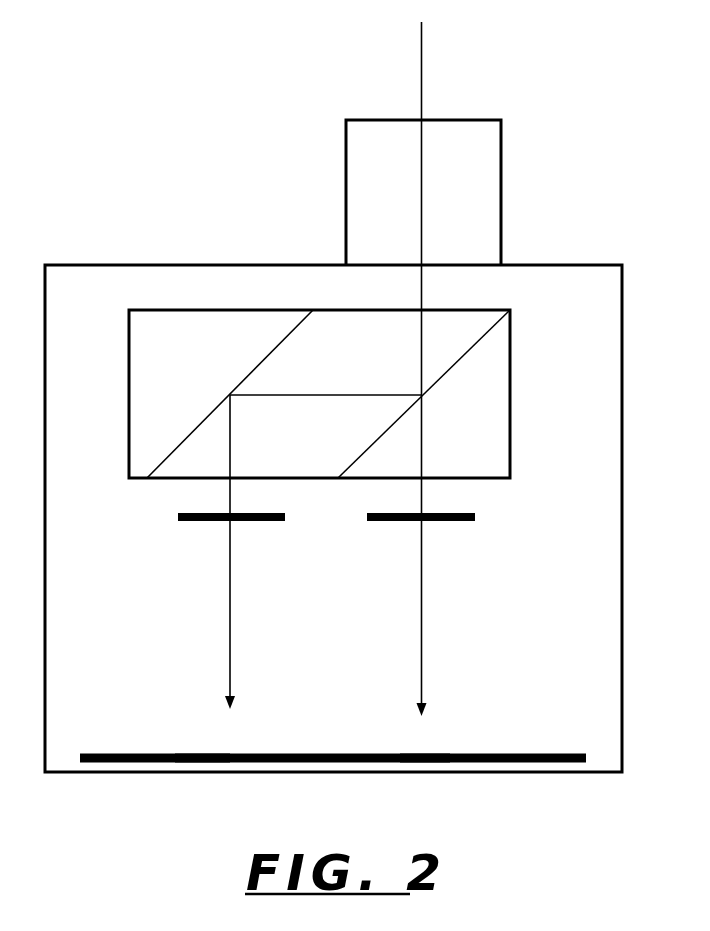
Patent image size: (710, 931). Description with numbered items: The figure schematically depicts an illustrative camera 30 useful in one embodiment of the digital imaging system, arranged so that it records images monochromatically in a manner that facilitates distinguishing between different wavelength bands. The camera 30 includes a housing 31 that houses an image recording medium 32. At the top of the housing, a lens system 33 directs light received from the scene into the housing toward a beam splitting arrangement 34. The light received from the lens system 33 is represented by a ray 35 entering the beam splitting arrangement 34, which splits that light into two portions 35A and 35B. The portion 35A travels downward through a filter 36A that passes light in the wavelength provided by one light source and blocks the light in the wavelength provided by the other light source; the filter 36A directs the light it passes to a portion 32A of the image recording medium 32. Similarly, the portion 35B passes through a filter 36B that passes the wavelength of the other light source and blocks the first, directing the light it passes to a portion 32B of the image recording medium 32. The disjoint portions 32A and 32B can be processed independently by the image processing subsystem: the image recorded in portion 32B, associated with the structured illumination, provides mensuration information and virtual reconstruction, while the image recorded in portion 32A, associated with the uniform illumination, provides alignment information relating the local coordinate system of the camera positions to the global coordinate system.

The camera 30 is at (117, 142).
The housing 31 is at (622, 551).
The image recording medium 32 is at (545, 763).
The portion of the image recording medium 32A is at (220, 752).
The portion of the image recording medium 32B is at (428, 752).
The lens system 33 is at (501, 247).
The beam splitting arrangement 34 is at (510, 385).
The ray 35 is at (422, 90).
The portion of the light 35A is at (230, 590).
The portion of the light 35B is at (422, 583).
The filter 36A is at (196, 524).
The filter 36B is at (455, 522).